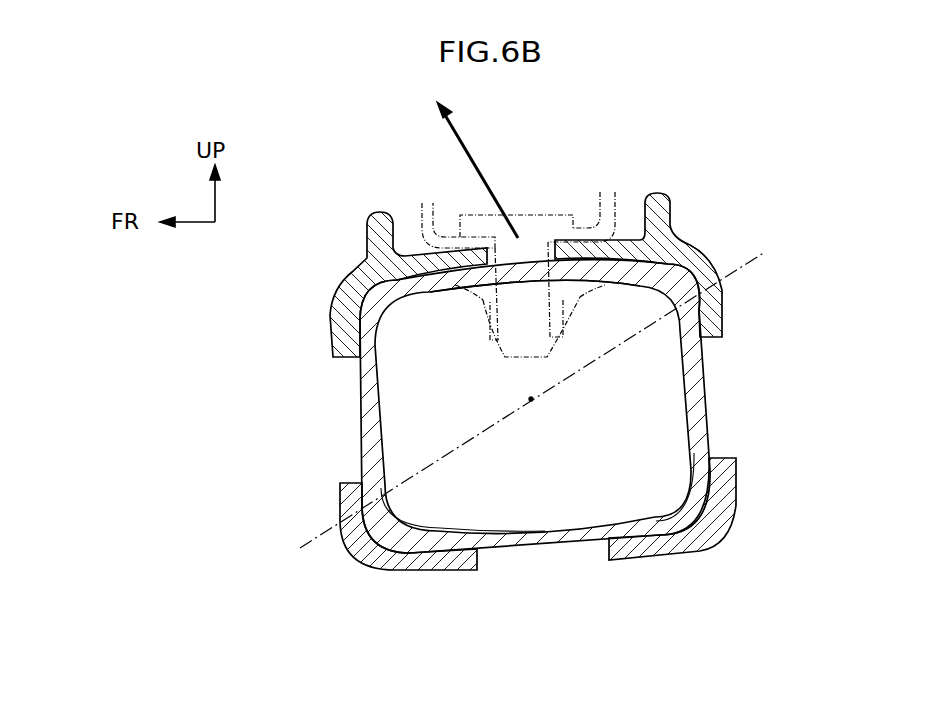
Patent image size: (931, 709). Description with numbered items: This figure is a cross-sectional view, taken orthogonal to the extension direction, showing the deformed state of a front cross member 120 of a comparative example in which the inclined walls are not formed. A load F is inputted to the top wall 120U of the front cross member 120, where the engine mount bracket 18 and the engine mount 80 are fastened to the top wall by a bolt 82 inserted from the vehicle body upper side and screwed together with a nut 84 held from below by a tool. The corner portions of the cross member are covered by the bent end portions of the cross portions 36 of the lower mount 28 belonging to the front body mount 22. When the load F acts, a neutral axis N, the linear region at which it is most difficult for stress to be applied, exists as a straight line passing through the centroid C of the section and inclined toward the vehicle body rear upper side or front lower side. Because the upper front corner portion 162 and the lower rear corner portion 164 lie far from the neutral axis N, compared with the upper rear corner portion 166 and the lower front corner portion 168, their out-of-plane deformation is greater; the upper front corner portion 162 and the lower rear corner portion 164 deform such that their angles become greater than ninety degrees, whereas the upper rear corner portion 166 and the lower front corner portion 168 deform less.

The engine mount bracket 18 is at (527, 265).
The upper front corner portion 162 is at (343, 293).
The upper rear corner portion 166 is at (700, 268).
The front cross member 120 is at (574, 405).
The top wall 120U is at (517, 272).
The lower mount 28 is at (386, 556).
The front body mount 22 is at (386, 556).
The lower front corner portion 168 is at (356, 555).
The cross portion 36 is at (696, 536).
The lower rear corner portion 164 is at (700, 509).
The engine mount 80 is at (549, 256).
The bolt 82 is at (555, 208).
The nut 84 is at (487, 327).
The load F is at (483, 168).
The neutral axis N is at (300, 546).
The centroid C is at (534, 400).